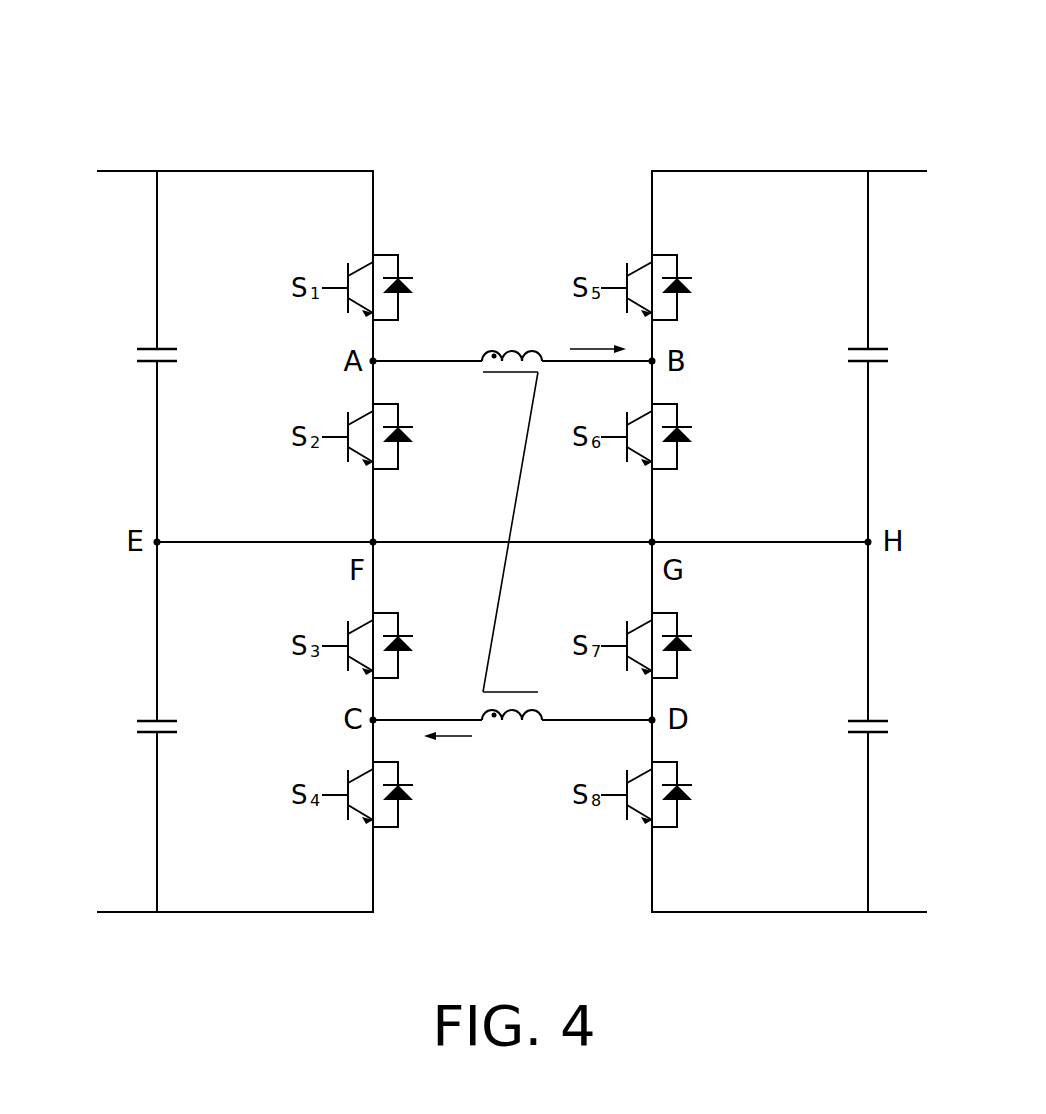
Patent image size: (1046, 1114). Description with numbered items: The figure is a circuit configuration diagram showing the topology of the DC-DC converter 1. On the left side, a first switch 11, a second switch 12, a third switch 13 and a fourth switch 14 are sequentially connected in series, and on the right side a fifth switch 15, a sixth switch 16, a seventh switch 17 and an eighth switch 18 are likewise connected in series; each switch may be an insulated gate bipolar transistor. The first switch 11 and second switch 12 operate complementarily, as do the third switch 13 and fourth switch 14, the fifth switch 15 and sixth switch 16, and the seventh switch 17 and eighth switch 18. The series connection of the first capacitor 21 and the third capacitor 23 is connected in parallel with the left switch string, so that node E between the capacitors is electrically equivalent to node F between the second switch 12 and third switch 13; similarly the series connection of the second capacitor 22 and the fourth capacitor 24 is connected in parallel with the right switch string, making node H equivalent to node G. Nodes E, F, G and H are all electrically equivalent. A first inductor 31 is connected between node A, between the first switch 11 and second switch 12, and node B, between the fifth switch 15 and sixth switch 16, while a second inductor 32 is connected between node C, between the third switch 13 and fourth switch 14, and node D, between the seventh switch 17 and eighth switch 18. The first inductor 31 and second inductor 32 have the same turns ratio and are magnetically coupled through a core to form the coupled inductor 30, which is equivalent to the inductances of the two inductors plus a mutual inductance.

The DC-DC converter 1 is at (731, 33).
The first switch 11 is at (398, 268).
The second switch 12 is at (398, 418).
The third switch 13 is at (398, 628).
The fourth switch 14 is at (398, 812).
The fifth switch 15 is at (677, 265).
The sixth switch 16 is at (677, 418).
The seventh switch 17 is at (677, 625).
The eighth switch 18 is at (677, 770).
The first capacitor 21 is at (145, 349).
The second capacitor 22 is at (870, 349).
The third capacitor 23 is at (145, 720).
The fourth capacitor 24 is at (870, 720).
The coupled inductor 30 is at (527, 246).
The first inductor 31 is at (482, 350).
The second inductor 32 is at (542, 712).